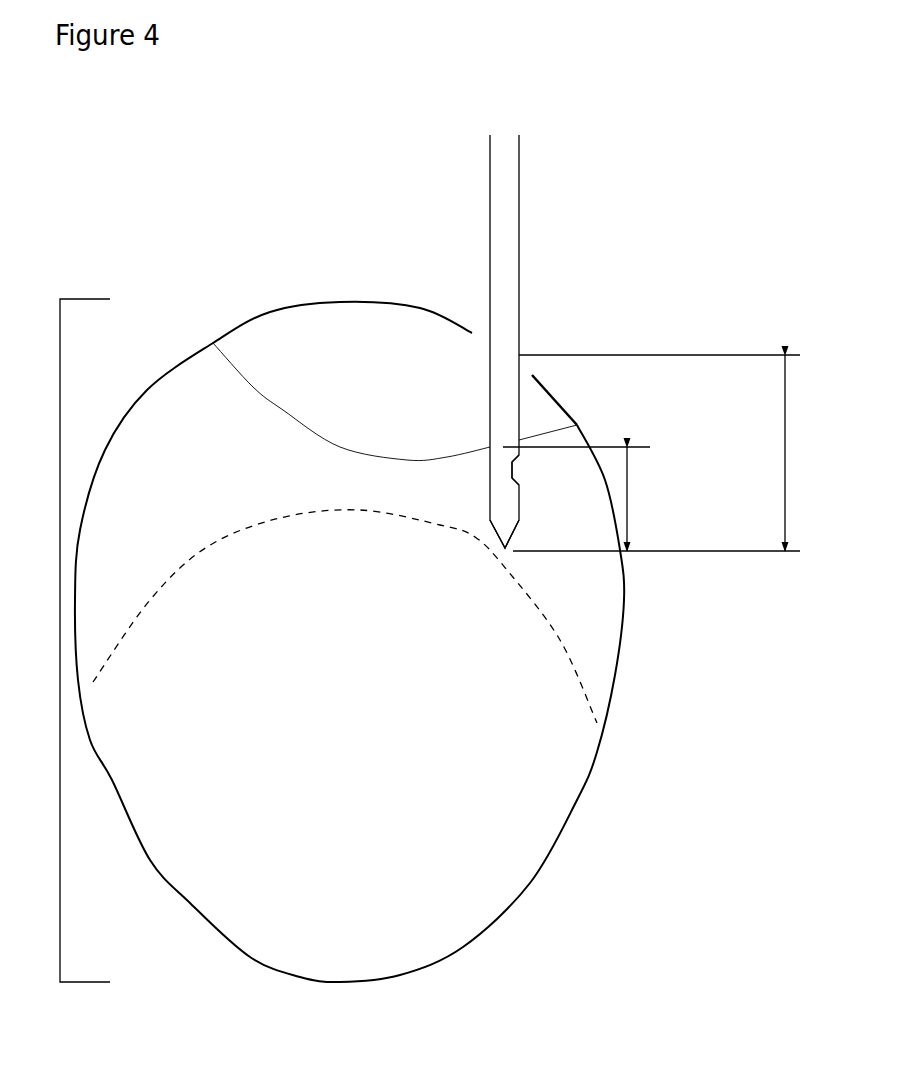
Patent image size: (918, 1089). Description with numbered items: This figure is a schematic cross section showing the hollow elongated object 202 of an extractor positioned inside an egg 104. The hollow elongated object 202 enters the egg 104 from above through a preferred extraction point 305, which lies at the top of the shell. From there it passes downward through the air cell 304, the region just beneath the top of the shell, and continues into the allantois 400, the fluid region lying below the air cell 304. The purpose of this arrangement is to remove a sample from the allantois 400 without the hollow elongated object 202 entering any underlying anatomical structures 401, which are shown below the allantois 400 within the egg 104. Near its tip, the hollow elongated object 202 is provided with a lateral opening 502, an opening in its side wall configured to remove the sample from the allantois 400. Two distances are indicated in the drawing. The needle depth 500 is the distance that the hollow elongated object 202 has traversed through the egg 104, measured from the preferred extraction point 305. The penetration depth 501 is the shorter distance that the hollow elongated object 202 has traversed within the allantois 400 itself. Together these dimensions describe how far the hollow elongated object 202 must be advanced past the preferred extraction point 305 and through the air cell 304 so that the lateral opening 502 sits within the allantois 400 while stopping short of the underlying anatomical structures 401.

The egg 104 is at (85, 640).
The hollow elongated object 202 is at (505, 258).
The air cell 304 is at (373, 353).
The preferred extraction point 305 is at (506, 355).
The allantois 400 is at (258, 453).
The underlying anatomical structures 401 is at (497, 752).
The needle depth 500 is at (785, 452).
The penetration depth 501 is at (627, 493).
The lateral opening 502 is at (517, 473).